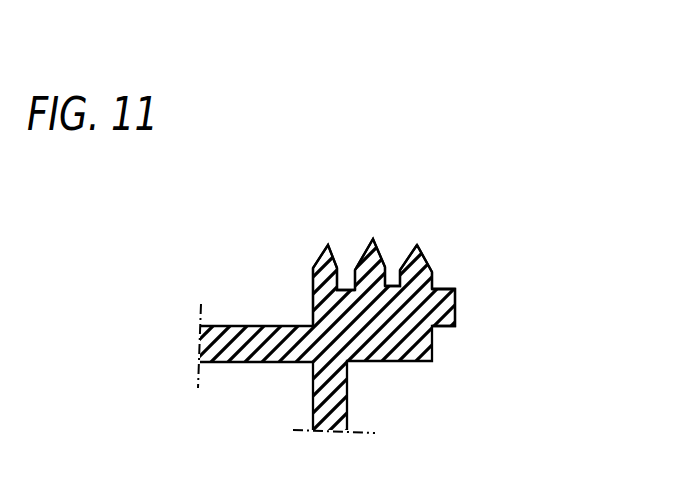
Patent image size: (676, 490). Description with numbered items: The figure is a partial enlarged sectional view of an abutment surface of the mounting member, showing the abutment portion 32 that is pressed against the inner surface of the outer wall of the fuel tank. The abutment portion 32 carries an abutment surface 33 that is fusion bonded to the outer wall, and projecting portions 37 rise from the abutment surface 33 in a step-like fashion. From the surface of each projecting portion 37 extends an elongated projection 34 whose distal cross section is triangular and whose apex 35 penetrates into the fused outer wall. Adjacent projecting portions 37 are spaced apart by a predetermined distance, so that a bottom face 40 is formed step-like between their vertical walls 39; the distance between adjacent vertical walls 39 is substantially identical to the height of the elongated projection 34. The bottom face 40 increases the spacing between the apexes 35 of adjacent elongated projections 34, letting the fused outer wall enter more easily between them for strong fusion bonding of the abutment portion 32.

The abutment portion 32 is at (433, 345).
The abutment surface 33 is at (457, 307).
The elongated projection 34 is at (434, 268).
The apex 35 is at (373, 245).
The projecting portion 37 is at (437, 288).
The vertical wall 39 is at (393, 286).
The bottom face 40 is at (345, 290).